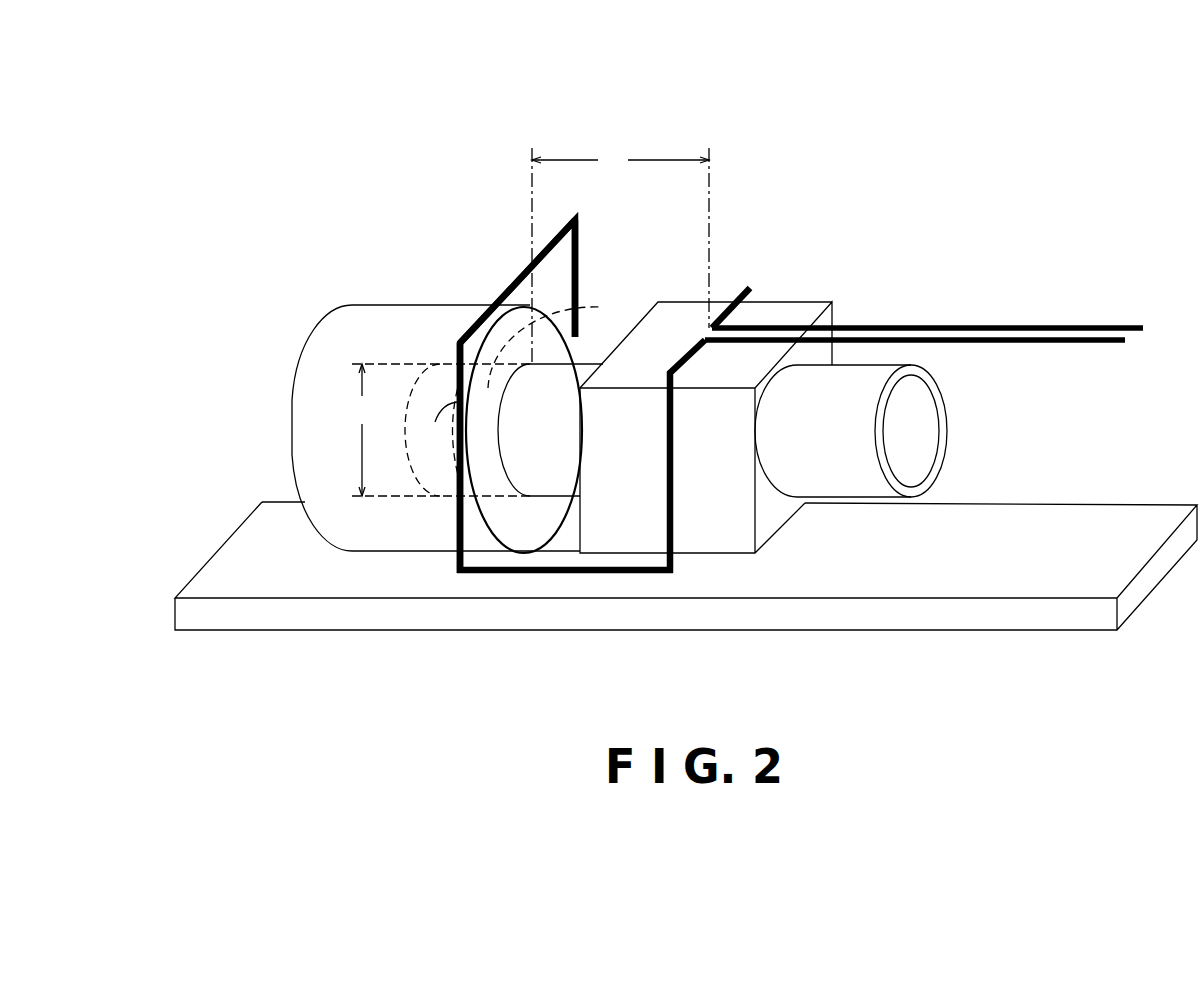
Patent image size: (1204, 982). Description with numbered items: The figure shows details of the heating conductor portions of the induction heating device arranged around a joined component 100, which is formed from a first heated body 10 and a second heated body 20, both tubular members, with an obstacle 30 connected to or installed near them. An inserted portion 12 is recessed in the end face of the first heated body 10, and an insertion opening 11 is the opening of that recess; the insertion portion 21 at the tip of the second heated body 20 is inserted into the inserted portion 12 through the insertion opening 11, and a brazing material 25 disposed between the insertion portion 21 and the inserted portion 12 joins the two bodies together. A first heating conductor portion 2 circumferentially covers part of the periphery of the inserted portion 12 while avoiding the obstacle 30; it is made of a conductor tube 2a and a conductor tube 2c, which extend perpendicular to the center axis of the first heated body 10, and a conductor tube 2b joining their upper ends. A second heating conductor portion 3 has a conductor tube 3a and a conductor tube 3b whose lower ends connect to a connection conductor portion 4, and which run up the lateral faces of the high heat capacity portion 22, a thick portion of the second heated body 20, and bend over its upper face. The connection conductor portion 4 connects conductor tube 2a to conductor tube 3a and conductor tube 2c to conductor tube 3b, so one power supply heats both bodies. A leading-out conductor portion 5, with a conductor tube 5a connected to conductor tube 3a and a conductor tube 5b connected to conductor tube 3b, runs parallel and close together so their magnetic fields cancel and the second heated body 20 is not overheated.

The joined component 100 is at (664, 424).
The first heated body 10 is at (288, 417).
The insertion opening 11 is at (550, 430).
The brazing material 25 is at (499, 412).
The inserted portion 12 is at (403, 432).
The first heating conductor portion 2 is at (514, 387).
The conductor tube 2a is at (458, 523).
The conductor tube 2b is at (472, 327).
The conductor tube 2c is at (577, 252).
The insertion portion 21 is at (585, 307).
The high heat capacity portion 22 is at (683, 323).
The second heating conductor portion 3 is at (706, 404).
The conductor tube 3a is at (672, 417).
The conductor tube 3b is at (752, 298).
The connection conductor portion 4 is at (562, 578).
The leading-out conductor portion 5 is at (938, 324).
The conductor tube 5a is at (1073, 343).
The conductor tube 5b is at (1090, 325).
The second heated body 20 is at (950, 435).
The obstacle 30 is at (808, 613).